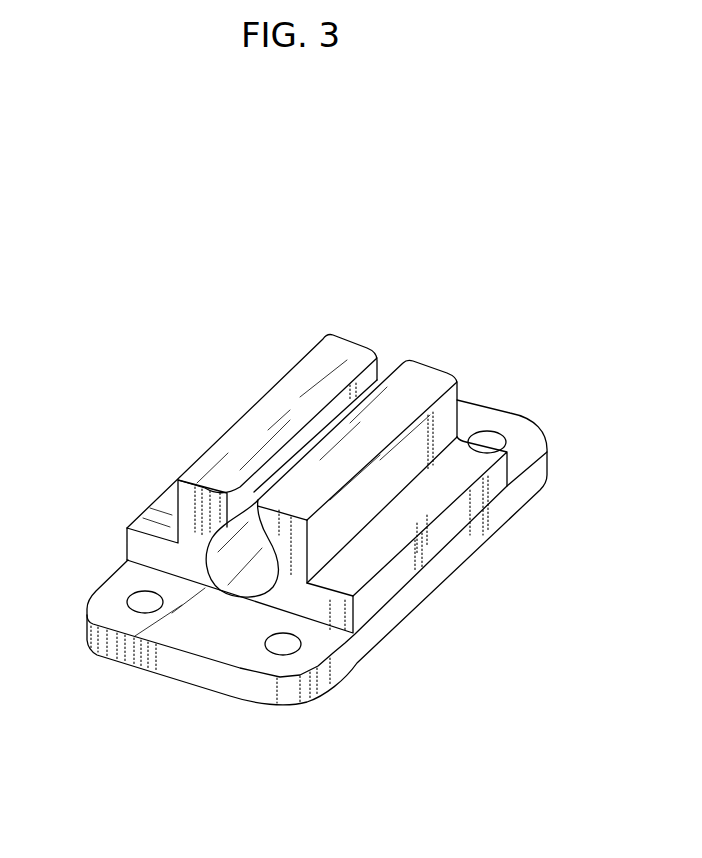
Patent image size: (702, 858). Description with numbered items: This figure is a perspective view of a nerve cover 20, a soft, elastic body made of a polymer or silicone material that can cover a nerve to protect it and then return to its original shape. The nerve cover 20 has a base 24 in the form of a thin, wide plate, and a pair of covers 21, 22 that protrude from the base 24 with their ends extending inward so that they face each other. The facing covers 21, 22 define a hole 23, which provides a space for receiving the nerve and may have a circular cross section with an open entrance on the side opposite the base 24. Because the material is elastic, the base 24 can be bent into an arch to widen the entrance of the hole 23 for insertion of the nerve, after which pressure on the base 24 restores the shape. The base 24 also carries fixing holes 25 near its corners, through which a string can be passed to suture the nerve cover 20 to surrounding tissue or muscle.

The nerve cover 20 is at (122, 229).
The cover 21 is at (193, 510).
The cover 22 is at (313, 578).
The hole 23 is at (247, 583).
The base 24 is at (290, 694).
The fixing hole 25 is at (143, 592).